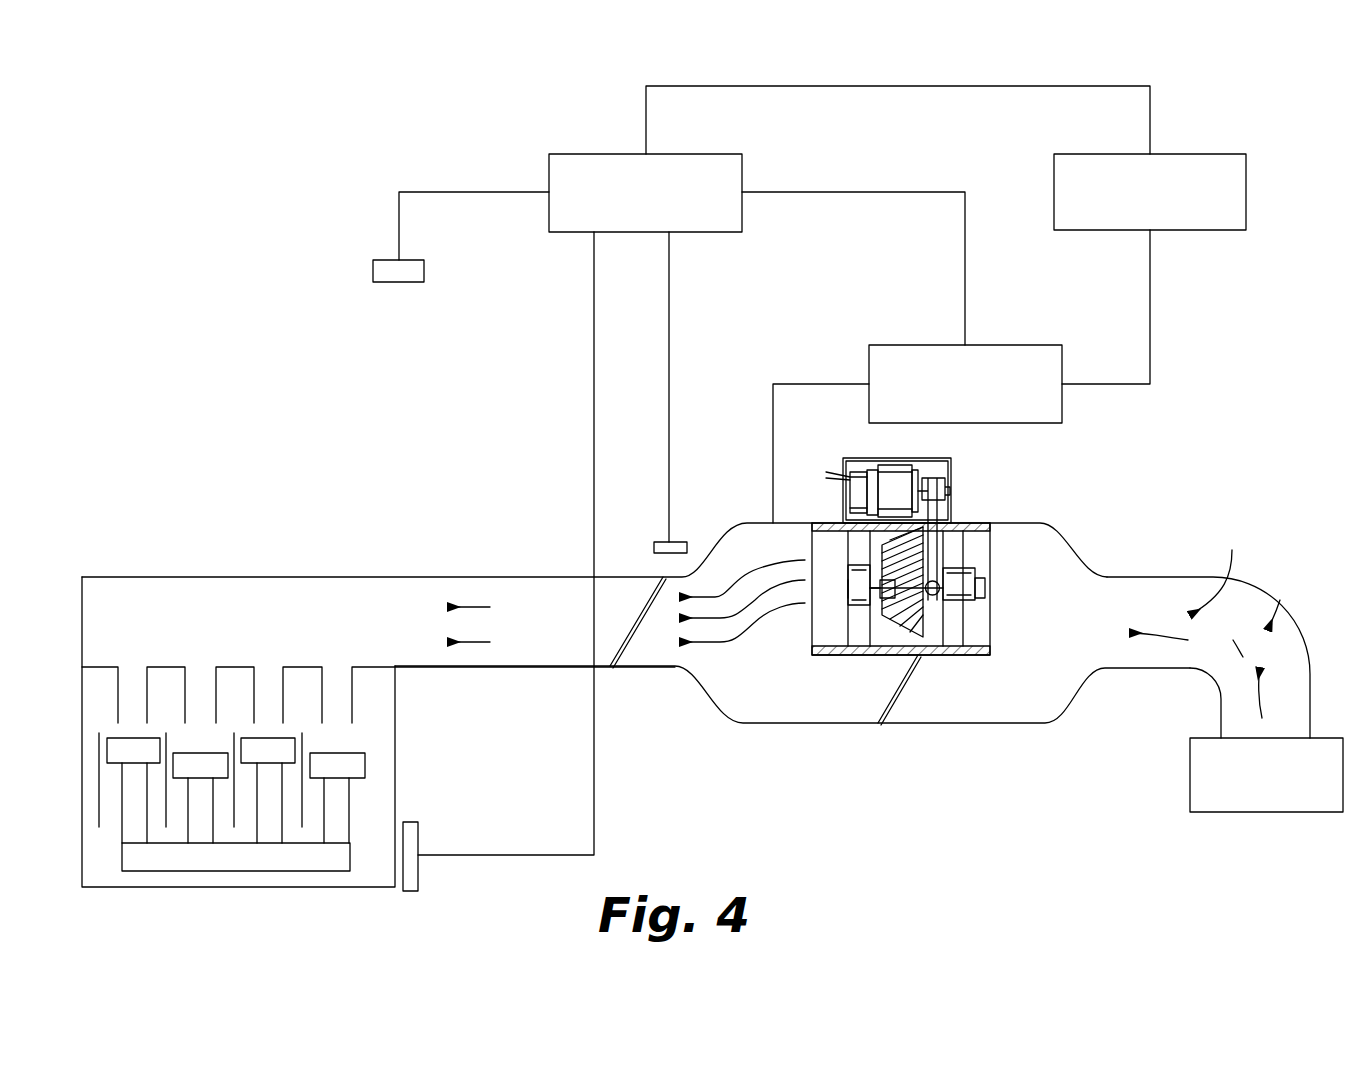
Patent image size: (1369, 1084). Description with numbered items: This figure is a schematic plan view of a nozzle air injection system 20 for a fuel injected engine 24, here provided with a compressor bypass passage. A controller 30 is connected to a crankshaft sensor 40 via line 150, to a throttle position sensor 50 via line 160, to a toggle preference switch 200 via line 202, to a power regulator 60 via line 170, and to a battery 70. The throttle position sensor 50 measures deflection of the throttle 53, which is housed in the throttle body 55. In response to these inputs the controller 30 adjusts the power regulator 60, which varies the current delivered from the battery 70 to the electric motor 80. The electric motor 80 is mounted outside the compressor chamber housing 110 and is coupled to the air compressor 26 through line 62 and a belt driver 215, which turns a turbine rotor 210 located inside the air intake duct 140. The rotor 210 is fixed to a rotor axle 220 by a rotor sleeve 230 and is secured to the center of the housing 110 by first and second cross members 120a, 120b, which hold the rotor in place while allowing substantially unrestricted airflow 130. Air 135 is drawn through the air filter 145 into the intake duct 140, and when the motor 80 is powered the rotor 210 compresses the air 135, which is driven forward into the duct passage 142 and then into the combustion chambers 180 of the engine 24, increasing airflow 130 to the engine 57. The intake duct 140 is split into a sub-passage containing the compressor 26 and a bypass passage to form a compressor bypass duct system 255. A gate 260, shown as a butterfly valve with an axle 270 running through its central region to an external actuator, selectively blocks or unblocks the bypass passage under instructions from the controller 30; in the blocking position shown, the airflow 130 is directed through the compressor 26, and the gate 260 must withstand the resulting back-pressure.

The nozzle air injection system 20 is at (205, 126).
The fuel injected engine 24 is at (335, 890).
The air compressor 26 is at (835, 685).
The controller 30 is at (742, 162).
The crankshaft sensor 40 is at (420, 882).
The throttle position sensor 50 is at (657, 542).
The throttle 53 is at (636, 645).
The throttle body 55 is at (650, 640).
The engine 57 is at (90, 886).
The power regulator 60 is at (1013, 345).
The line 62 is at (811, 384).
The battery 70 is at (1195, 154).
The electric motor 80 is at (870, 465).
The compressor chamber housing 110 is at (990, 525).
The first cross member 120a is at (985, 548).
The second cross member 120b is at (855, 632).
The airflow 130 is at (470, 605).
The air 135 is at (1268, 612).
The air intake duct 140 is at (1221, 700).
The duct passage 142 is at (277, 577).
The air filter 145 is at (1190, 780).
The line 150 is at (594, 820).
The line 160 is at (669, 300).
The line 170 is at (965, 295).
The combustion chambers 180 is at (150, 835).
The toggle preference switch 200 is at (373, 268).
The line 202 is at (465, 192).
The turbine rotor 210 is at (995, 617).
The belt driver 215 is at (940, 482).
The rotor axle 220 is at (873, 564).
The rotor sleeve 230 is at (880, 600).
The compressor bypass duct system 255 is at (1055, 723).
The gate 260 is at (897, 702).
The axle 270 is at (900, 688).